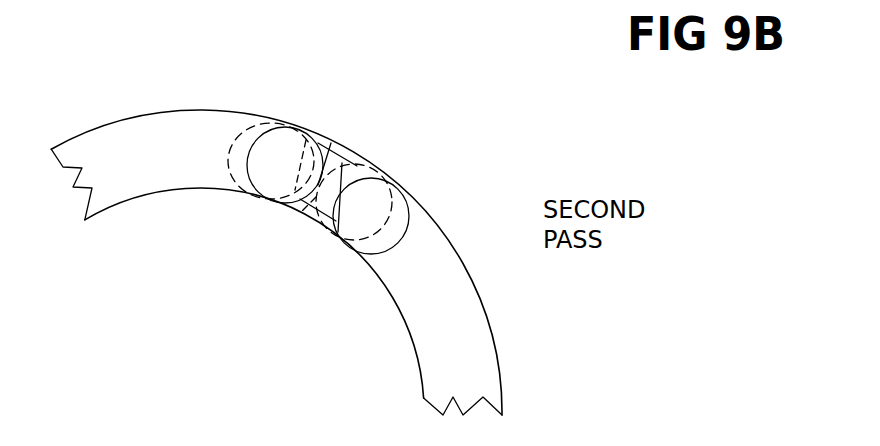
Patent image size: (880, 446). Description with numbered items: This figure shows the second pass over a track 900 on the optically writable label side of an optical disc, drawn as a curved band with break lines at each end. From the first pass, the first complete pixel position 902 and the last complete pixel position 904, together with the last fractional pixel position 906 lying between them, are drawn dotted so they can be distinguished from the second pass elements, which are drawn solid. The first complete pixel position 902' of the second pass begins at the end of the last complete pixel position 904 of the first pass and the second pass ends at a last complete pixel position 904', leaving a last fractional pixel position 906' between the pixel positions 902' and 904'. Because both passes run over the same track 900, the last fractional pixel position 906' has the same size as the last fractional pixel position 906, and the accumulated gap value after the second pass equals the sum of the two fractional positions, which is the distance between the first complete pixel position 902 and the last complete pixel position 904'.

The track 900 is at (73, 141).
The first complete pixel position 902 is at (238, 177).
The first complete pixel position of the second pass 902' is at (285, 124).
The last complete pixel position 904 is at (375, 183).
The last complete pixel position of the second pass 904' is at (342, 236).
The last fractional pixel position 906 is at (334, 157).
The last fractional pixel position of the second pass 906' is at (272, 206).